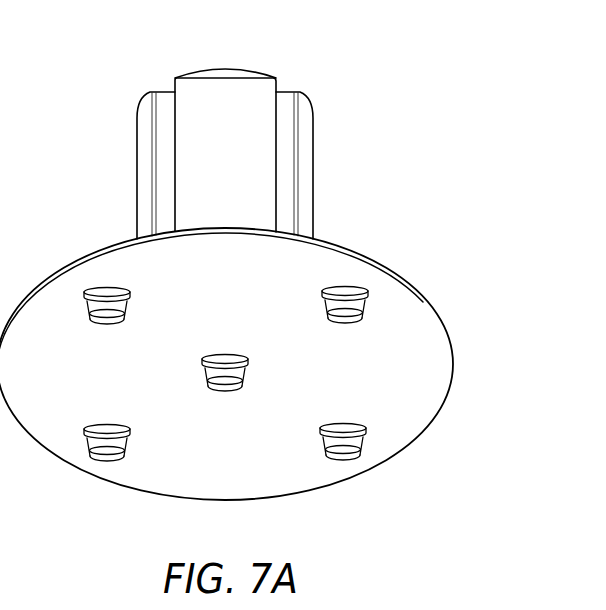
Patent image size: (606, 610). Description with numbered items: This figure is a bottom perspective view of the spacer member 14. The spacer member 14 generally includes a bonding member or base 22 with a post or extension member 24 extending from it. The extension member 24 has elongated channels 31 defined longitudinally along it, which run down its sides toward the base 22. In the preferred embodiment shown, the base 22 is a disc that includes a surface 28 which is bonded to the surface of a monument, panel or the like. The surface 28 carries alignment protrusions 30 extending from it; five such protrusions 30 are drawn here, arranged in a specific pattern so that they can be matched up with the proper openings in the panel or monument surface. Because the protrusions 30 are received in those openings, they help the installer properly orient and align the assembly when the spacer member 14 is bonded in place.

The spacer member 14 is at (412, 140).
The base 22 is at (405, 280).
The extension member 24 is at (243, 95).
The surface 28 is at (437, 370).
The alignment protrusions 30 is at (107, 318).
The elongated channels 31 is at (285, 143).